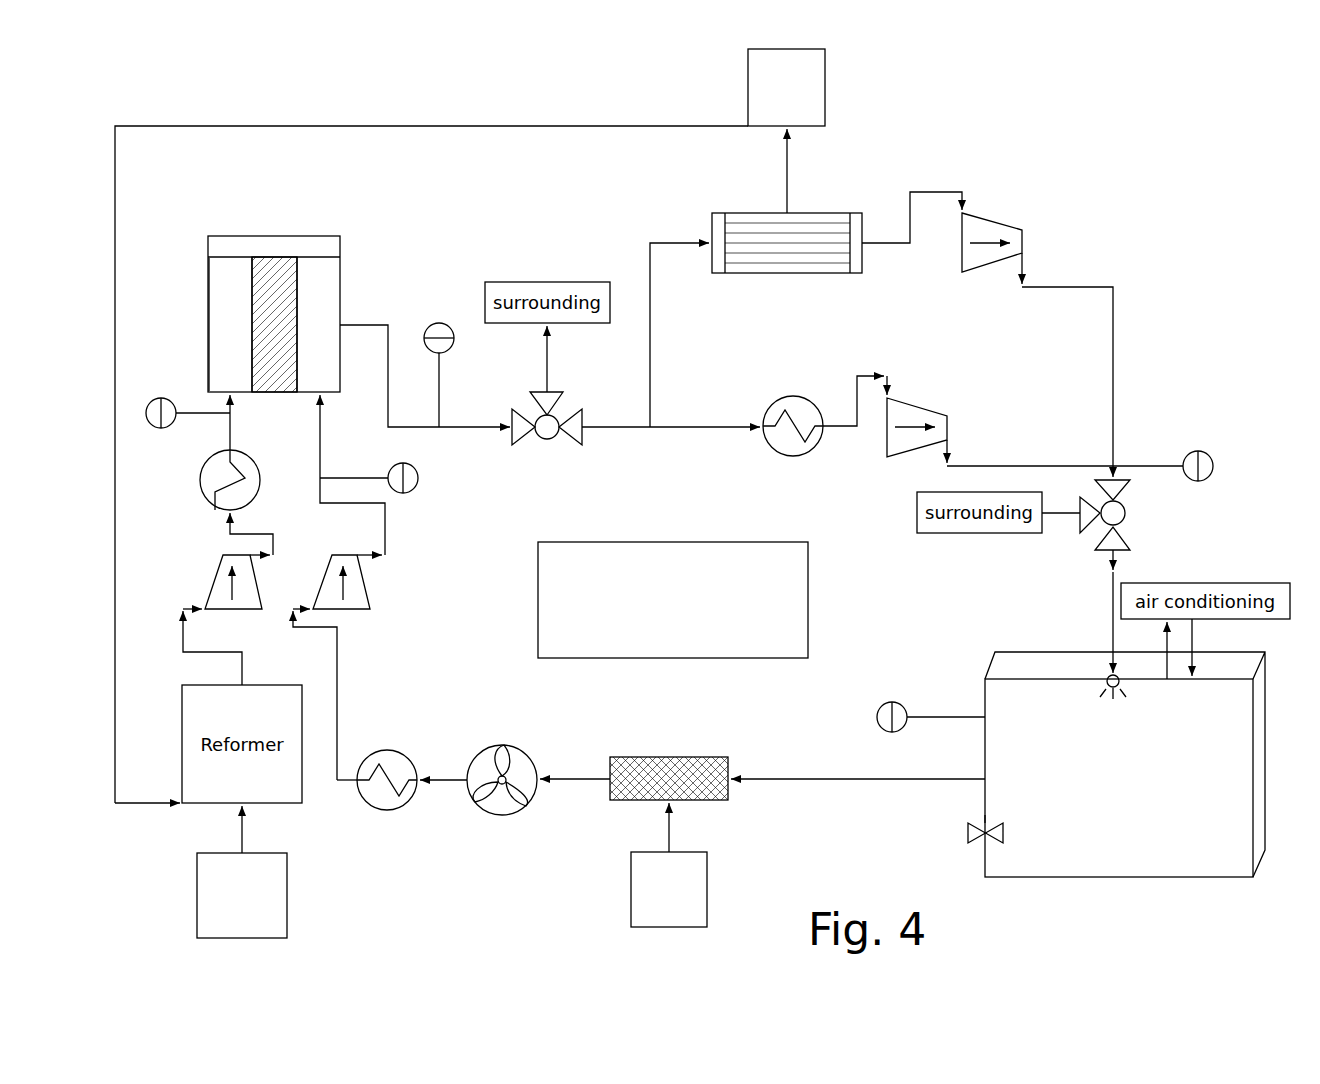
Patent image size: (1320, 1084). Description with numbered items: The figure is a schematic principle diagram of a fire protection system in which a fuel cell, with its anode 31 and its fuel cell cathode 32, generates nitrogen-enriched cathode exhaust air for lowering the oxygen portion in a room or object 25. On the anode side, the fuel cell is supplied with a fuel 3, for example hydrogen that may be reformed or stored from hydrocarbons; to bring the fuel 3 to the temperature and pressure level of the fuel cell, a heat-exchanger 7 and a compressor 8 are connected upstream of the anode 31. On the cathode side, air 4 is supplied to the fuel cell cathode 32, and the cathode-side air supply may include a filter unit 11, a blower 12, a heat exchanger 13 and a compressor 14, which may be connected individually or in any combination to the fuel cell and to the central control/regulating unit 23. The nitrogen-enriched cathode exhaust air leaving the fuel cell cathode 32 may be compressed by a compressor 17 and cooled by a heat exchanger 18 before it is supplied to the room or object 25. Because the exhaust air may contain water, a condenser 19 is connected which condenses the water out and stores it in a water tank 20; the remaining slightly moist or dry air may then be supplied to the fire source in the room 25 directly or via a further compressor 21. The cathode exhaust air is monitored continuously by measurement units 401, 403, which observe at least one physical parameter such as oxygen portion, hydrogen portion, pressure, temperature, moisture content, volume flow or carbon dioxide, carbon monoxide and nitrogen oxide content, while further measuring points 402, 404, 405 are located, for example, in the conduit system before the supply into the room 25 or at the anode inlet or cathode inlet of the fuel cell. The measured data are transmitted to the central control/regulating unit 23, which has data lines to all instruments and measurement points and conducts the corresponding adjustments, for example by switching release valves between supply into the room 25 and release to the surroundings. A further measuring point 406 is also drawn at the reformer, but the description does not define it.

The fuel 3 is at (287, 890).
The air 4 is at (707, 862).
The heat-exchanger 7 is at (240, 452).
The compressor 8 is at (209, 580).
The filter unit 11 is at (670, 757).
The blower 12 is at (505, 746).
The heat exchanger 13 is at (392, 750).
The compressor 14 is at (372, 590).
The compressor 17 is at (920, 408).
The heat exchanger 18 is at (790, 456).
The condenser 19 is at (835, 213).
The water tank 20 is at (825, 68).
The compressor 21 is at (1005, 225).
The control/regulating unit 23 is at (808, 598).
The room or object 25 is at (997, 796).
The anode 31 is at (208, 288).
The fuel cell cathode 32 is at (340, 263).
The measurement unit 401 is at (439, 323).
The measuring point 402 is at (892, 702).
The measurement unit 403 is at (1198, 451).
The measuring point 404 is at (160, 428).
The measuring point 405 is at (418, 478).
The measurement point 406 is at (182, 735).